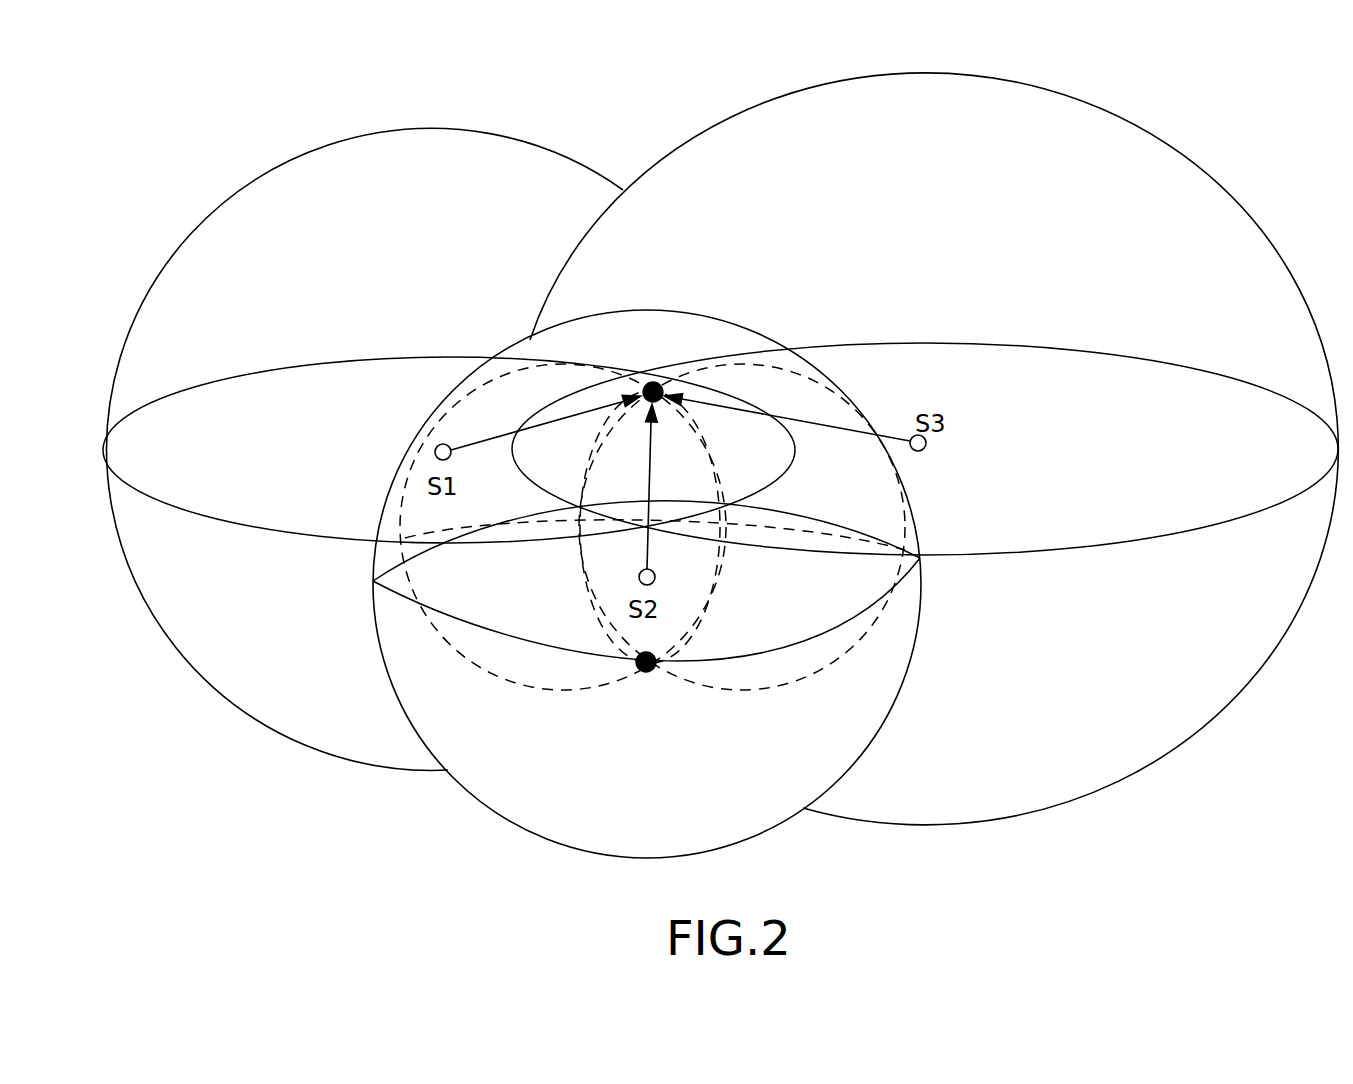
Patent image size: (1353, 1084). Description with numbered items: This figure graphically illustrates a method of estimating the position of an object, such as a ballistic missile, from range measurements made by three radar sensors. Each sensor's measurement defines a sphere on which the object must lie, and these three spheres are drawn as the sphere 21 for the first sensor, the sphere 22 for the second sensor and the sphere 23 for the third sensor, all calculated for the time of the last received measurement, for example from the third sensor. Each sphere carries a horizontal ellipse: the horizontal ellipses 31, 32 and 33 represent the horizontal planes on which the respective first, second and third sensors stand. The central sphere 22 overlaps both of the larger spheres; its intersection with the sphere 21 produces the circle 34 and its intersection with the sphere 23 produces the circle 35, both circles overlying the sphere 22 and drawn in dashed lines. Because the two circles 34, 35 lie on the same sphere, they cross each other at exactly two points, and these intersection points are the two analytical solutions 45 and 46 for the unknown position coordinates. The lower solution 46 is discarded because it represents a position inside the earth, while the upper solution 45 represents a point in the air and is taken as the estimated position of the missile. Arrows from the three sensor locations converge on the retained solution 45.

The sphere 21 is at (245, 713).
The sphere 22 is at (510, 822).
The sphere 23 is at (1129, 117).
The horizontal ellipse 31 is at (183, 512).
The horizontal ellipse 32 is at (458, 636).
The horizontal ellipse 33 is at (1113, 551).
The circle 34 is at (510, 680).
The circle 35 is at (786, 685).
The solution 45 is at (655, 382).
The solution 46 is at (646, 674).